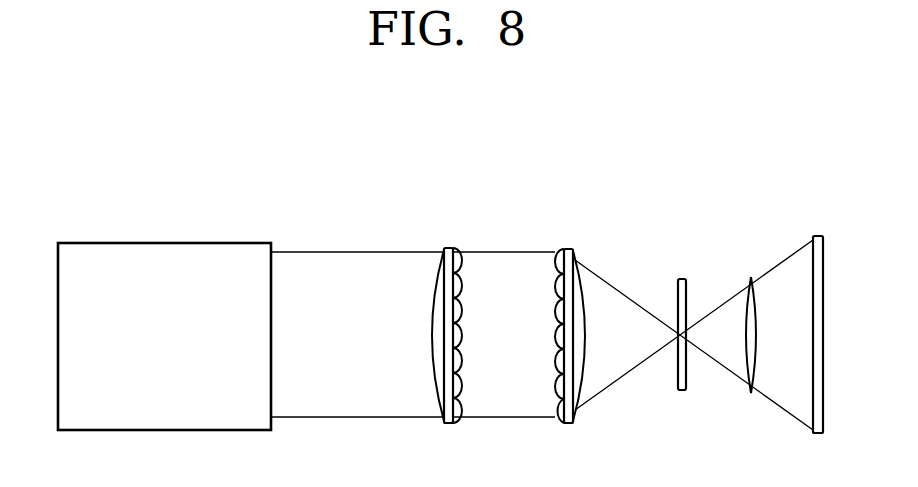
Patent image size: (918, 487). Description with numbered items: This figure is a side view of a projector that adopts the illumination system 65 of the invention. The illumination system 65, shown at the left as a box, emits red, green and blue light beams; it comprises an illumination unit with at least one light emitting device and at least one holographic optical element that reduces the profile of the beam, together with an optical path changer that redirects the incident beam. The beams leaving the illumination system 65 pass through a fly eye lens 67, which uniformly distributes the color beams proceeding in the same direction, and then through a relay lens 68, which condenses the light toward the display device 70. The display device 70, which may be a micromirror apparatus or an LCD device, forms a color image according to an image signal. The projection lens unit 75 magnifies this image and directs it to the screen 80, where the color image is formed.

The illumination system 65 is at (163, 233).
The fly eye lens 67 is at (449, 247).
The relay lens 68 is at (570, 248).
The display device 70 is at (682, 278).
The projection lens unit 75 is at (752, 276).
The screen 80 is at (817, 235).